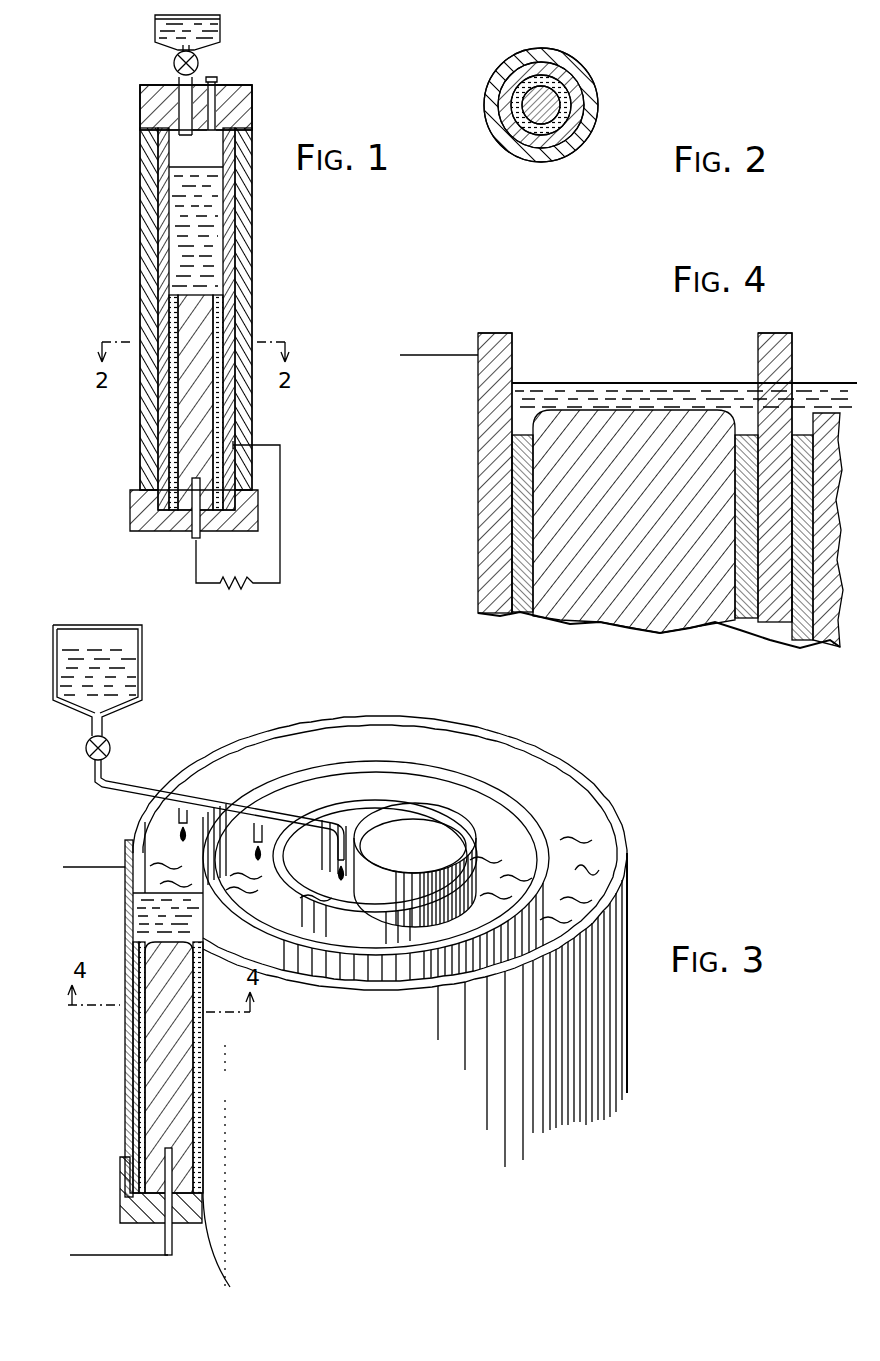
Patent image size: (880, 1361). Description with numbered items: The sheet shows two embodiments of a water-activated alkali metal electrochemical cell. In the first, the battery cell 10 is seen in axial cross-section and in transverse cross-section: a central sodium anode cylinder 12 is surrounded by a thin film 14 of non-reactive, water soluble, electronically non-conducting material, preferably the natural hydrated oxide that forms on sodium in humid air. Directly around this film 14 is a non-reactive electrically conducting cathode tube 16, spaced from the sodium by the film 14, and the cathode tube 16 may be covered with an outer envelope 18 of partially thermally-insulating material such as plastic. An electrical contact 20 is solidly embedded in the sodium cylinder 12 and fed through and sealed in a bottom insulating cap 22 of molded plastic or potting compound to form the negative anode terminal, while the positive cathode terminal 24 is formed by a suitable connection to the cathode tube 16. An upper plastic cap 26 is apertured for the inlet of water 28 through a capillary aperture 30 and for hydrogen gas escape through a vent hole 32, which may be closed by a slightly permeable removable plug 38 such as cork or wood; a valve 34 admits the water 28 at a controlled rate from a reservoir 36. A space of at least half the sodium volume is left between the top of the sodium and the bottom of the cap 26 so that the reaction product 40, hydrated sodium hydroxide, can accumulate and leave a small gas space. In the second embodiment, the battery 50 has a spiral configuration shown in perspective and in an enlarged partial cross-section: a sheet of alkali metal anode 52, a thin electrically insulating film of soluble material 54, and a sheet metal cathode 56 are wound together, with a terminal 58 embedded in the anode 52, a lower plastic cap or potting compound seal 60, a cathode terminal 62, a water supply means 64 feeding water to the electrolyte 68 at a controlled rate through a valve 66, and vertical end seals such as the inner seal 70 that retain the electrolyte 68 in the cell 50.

In FIG. 1, the battery cell 10 is at (100, 204).
In FIG. 2, the battery cell 10 is at (616, 104).
In FIG. 1, the alkali metal anode cylinder 12 is at (193, 296).
In FIG. 2, the alkali metal anode cylinder 12 is at (512, 88).
In FIG. 1, the thin film 14 is at (157, 317).
In FIG. 2, the thin film 14 is at (523, 75).
In FIG. 1, the cathode tube 16 is at (155, 427).
In FIG. 2, the cathode tube 16 is at (557, 58).
In FIG. 1, the outer envelope 18 is at (140, 457).
In FIG. 2, the outer envelope 18 is at (588, 70).
In FIG. 1, the electrical contact 20 is at (193, 543).
In FIG. 1, the bottom insulating cap 22 is at (132, 510).
In FIG. 1, the positive cathode terminal 24 is at (234, 447).
In FIG. 1, the upper plastic cap 26 is at (140, 97).
In FIG. 1, the water 28 is at (155, 33).
In FIG. 1, the capillary aperture 30 is at (177, 78).
In FIG. 1, the vent hole 32 is at (217, 100).
In FIG. 1, the valve 34 is at (198, 58).
In FIG. 1, the reservoir 36 is at (220, 20).
In FIG. 1, the removable plug 38 is at (217, 77).
In FIG. 1, the reaction product 40 is at (180, 242).
In FIG. 4, the battery 50 is at (450, 424).
In FIG. 3, the battery 50 is at (656, 1048).
In FIG. 4, the alkali metal anode 52 is at (620, 505).
In FIG. 3, the alkali metal anode 52 is at (150, 1095).
In FIG. 4, the thin electrically insulating film 54 is at (512, 528).
In FIG. 3, the thin electrically insulating film 54 is at (137, 1078).
In FIG. 4, the sheet metal cathode 56 is at (758, 348).
In FIG. 3, the sheet metal cathode 56 is at (125, 1045).
In FIG. 3, the terminal 58 is at (168, 1148).
In FIG. 3, the lower plastic cap 60 is at (120, 1205).
In FIG. 4, the cathode terminal 62 is at (478, 346).
In FIG. 3, the cathode terminal 62 is at (125, 850).
In FIG. 3, the water supply means 64 is at (142, 668).
In FIG. 3, the valve 66 is at (86, 748).
In FIG. 4, the electrolyte 68 is at (598, 380).
In FIG. 3, the electrolyte 68 is at (133, 925).
In FIG. 3, the inner seal 70 is at (353, 820).